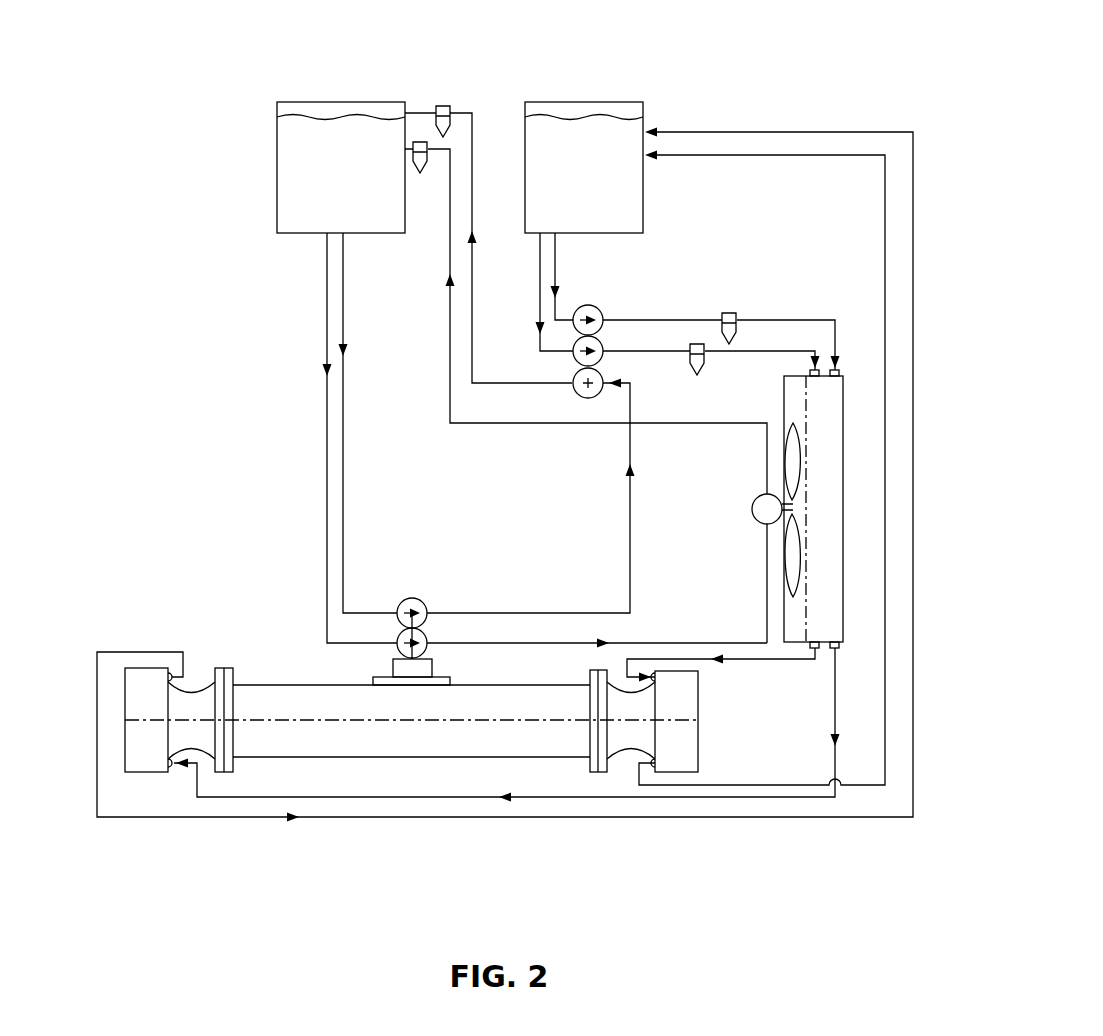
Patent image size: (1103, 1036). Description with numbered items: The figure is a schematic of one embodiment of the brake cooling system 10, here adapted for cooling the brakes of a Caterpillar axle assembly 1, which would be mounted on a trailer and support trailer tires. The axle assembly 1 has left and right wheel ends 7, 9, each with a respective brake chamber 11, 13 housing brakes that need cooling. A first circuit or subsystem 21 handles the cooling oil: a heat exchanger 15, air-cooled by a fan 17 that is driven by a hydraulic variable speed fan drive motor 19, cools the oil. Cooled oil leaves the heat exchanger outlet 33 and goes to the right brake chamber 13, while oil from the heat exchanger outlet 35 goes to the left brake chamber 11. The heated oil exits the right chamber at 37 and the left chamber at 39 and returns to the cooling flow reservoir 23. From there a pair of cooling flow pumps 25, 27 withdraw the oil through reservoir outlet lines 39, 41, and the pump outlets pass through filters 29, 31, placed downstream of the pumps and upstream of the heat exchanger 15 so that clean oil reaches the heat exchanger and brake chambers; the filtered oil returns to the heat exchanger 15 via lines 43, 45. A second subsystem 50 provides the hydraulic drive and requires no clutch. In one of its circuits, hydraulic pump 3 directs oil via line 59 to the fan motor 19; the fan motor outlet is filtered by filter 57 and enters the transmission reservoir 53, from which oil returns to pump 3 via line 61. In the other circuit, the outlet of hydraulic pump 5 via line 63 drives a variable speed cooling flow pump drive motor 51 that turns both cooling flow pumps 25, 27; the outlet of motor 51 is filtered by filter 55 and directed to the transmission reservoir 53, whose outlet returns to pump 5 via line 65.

The axle assembly 1 is at (460, 758).
The hydraulic pump 3 is at (428, 637).
The hydraulic pump 5 is at (400, 602).
The left wheel end 7 is at (128, 792).
The right wheel end 9 is at (710, 748).
The system 10 is at (778, 50).
The brake chamber 11 is at (125, 695).
The brake chamber 13 is at (678, 775).
The heat exchanger 15 is at (845, 418).
The fan 17 is at (805, 552).
The variable speed fan drive motor 19 is at (762, 526).
The first circuit 21 is at (893, 98).
The cooling flow reservoir 23 is at (643, 112).
The cooling flow pump 25 is at (595, 306).
The cooling flow pump 27 is at (603, 345).
The filter 29 is at (737, 316).
The filter 31 is at (705, 368).
The heat exchanger outlet 33 is at (778, 660).
The heat exchanger outlet 35 is at (840, 700).
The brake chamber exit 37 is at (652, 786).
The reservoir outlet line 39 is at (556, 280).
The reservoir outlet line 41 is at (538, 278).
The line 43 is at (838, 325).
The line 45 is at (800, 350).
The second subsystem 50 is at (280, 280).
The variable speed cooling flow pump drive motor 51 is at (584, 398).
The transmission reservoir 53 is at (277, 170).
The filter 55 is at (452, 108).
The filter 57 is at (420, 178).
The line 59 is at (660, 643).
The line 61 is at (327, 473).
The line 63 is at (633, 533).
The line 65 is at (345, 415).